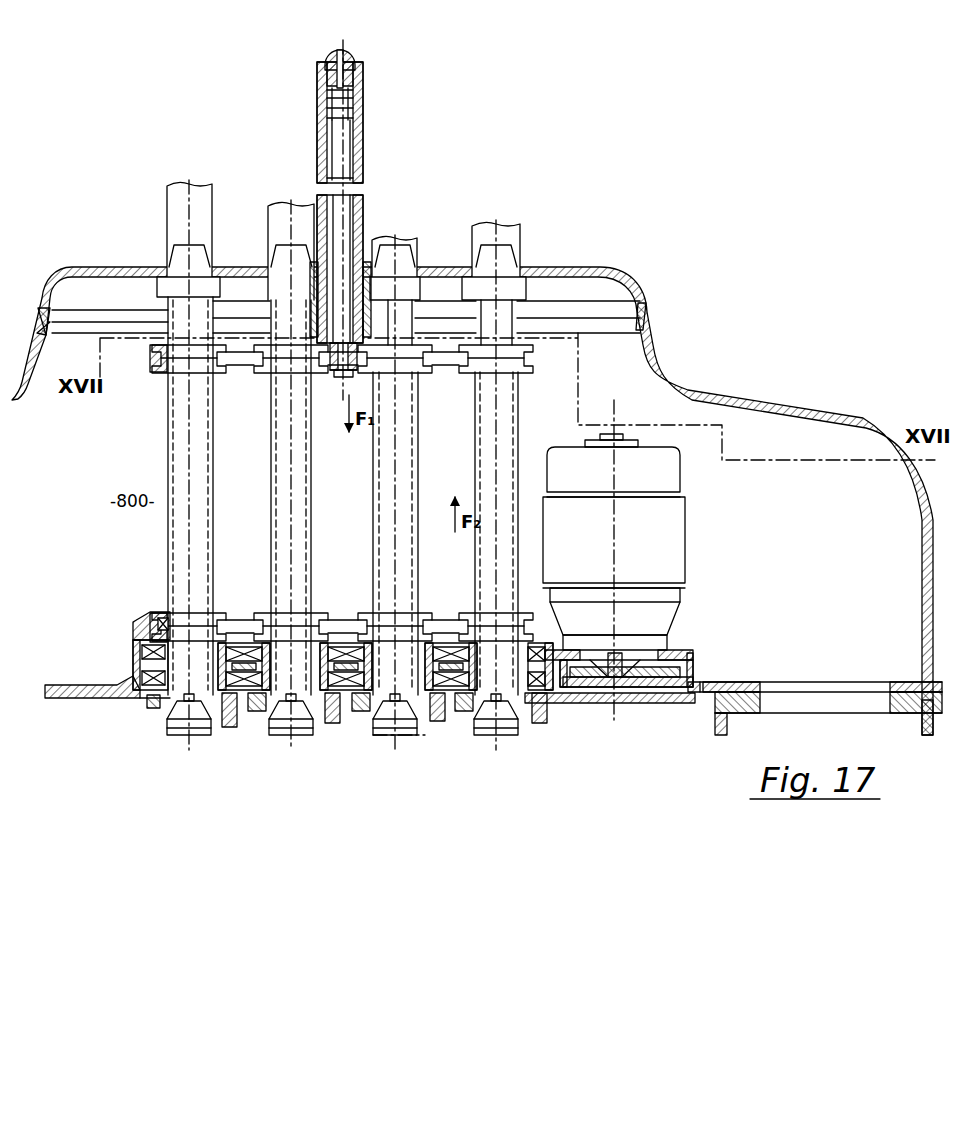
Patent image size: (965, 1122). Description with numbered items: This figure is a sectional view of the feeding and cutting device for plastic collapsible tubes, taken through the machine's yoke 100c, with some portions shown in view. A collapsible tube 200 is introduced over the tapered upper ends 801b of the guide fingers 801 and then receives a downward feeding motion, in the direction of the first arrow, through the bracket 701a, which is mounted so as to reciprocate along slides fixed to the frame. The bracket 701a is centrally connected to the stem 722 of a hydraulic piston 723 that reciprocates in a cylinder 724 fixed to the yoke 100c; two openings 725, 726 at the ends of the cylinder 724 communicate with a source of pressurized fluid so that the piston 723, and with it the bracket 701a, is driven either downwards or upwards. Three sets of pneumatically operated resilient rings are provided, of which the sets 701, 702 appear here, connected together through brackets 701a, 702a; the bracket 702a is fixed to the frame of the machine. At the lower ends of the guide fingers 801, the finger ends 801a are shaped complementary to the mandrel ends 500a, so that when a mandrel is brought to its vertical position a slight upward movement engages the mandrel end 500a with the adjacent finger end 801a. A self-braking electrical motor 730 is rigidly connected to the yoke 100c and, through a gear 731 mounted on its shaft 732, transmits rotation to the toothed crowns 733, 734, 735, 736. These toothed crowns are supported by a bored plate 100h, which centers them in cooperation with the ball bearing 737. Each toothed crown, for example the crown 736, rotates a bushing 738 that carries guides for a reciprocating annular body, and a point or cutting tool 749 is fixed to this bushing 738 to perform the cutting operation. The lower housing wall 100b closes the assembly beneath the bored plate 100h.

The yoke 100c is at (634, 282).
The bored plate 100h is at (698, 705).
The housing bottom wall 100b is at (930, 726).
The plastic collapsible tube 200 is at (167, 210).
The mandrel end 500a is at (186, 728).
The set of resilient rings 701 is at (285, 350).
The bracket 701a is at (246, 358).
The set of resilient rings 702 is at (404, 728).
The bracket 702a is at (306, 705).
The stem 722 is at (344, 226).
The hydraulic piston 723 is at (364, 115).
The cylinder 724 is at (364, 160).
The opening 725 is at (368, 240).
The opening 726 is at (356, 54).
The self-braking electrical motor 730 is at (648, 524).
The gear 731 is at (664, 682).
The shaft 732 is at (634, 690).
The toothed crown 733 is at (470, 735).
The toothed crown 734 is at (368, 712).
The toothed crown 735 is at (258, 712).
The toothed crown 736 is at (135, 675).
The ball bearing 737 is at (150, 635).
The bushing 738 is at (126, 690).
The cutting tool 749 is at (158, 710).
The guide finger 801 is at (492, 462).
The end of guide finger 801a is at (212, 700).
The tapered upper end 801b is at (272, 245).